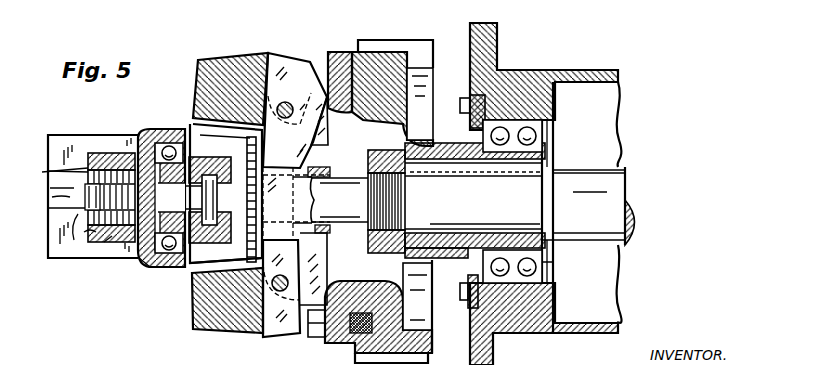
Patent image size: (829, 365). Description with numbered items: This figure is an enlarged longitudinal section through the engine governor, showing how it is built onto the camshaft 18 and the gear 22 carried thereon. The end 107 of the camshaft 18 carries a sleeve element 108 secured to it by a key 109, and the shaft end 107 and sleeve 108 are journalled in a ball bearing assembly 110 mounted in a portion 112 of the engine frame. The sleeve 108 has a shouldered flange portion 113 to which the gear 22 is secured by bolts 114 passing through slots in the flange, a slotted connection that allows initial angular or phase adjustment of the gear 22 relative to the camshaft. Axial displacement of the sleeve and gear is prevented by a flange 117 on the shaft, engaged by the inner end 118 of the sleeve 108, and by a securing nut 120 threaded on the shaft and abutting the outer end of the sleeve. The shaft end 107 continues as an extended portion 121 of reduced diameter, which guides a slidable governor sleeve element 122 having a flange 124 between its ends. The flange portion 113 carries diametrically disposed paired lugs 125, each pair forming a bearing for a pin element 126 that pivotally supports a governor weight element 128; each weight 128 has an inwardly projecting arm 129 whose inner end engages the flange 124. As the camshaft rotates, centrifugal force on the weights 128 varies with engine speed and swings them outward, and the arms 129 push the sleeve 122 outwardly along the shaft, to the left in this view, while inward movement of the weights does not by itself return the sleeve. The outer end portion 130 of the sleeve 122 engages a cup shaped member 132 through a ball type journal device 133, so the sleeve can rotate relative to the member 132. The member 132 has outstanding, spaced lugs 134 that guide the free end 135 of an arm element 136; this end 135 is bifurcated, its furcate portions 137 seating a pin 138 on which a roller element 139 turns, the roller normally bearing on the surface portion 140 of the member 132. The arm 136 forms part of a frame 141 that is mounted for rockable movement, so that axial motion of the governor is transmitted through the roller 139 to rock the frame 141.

The frame 141 is at (70, 136).
The furcate portions 137 is at (100, 168).
The cup shaped member 132 is at (139, 135).
The journal device 133 is at (170, 146).
The roller element 139 is at (52, 166).
The arm element 136 is at (62, 199).
The free end 135 is at (78, 214).
The pin 138 is at (85, 232).
The lugs 134 is at (104, 242).
The surface portion 140 is at (136, 258).
The outer end portion 130 is at (159, 186).
The governor weight element 128 is at (222, 62).
The slidable governor sleeve element 122 is at (208, 156).
The flange 124 is at (236, 248).
The pin element 126 is at (286, 103).
The arm 129 is at (296, 186).
The paired lugs 125 is at (314, 136).
The extended portion 121 is at (326, 193).
The securing nut 120 is at (393, 254).
The gear 22 is at (382, 62).
The shouldered flange portion 113 is at (318, 78).
The bolts 114 is at (310, 338).
The sleeve element 108 is at (455, 136).
The key 109 is at (450, 176).
The end of camshaft 107 is at (456, 205).
The inner end 118 is at (532, 232).
The portion of engine frame 112 is at (525, 78).
The ball bearing assembly 110 is at (543, 137).
The flange 117 is at (556, 257).
The camshaft 18 is at (624, 184).